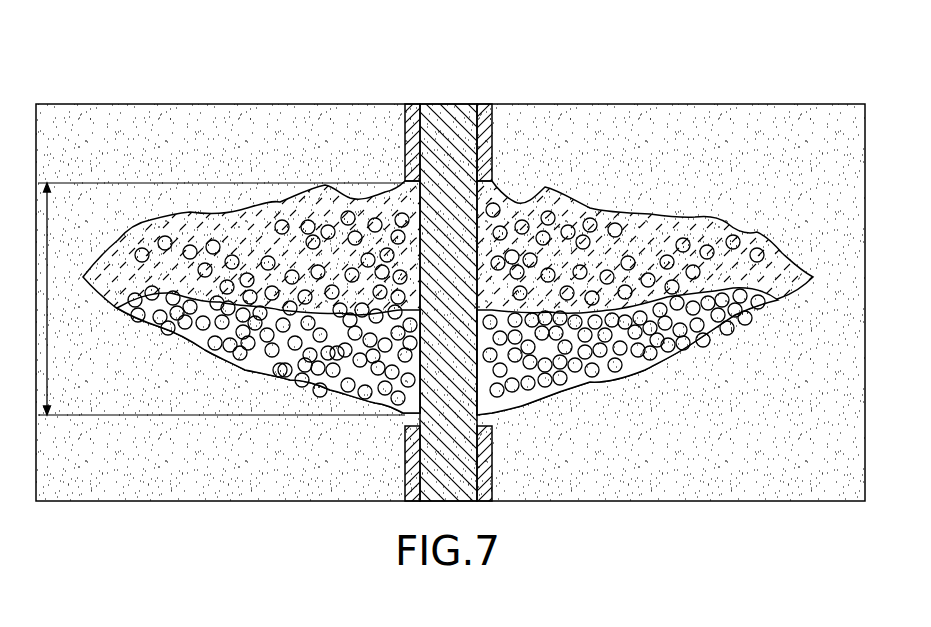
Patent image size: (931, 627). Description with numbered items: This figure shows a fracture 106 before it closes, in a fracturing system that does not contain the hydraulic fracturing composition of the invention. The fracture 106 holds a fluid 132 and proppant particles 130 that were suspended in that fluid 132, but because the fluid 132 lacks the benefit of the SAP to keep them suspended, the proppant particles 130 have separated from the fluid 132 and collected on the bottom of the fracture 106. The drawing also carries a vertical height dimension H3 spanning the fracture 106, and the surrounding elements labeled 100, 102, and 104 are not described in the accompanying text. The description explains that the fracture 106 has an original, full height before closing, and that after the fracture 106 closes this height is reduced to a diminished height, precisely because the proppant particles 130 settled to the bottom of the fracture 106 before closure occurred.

The subterranean formation 100 is at (88, 130).
The casing 102 is at (418, 128).
The wellbore 104 is at (450, 122).
The fracture 106 is at (631, 207).
The proppant particles 130 is at (718, 310).
The fluid 132 is at (245, 238).
The fracture height H3 is at (221, 299).